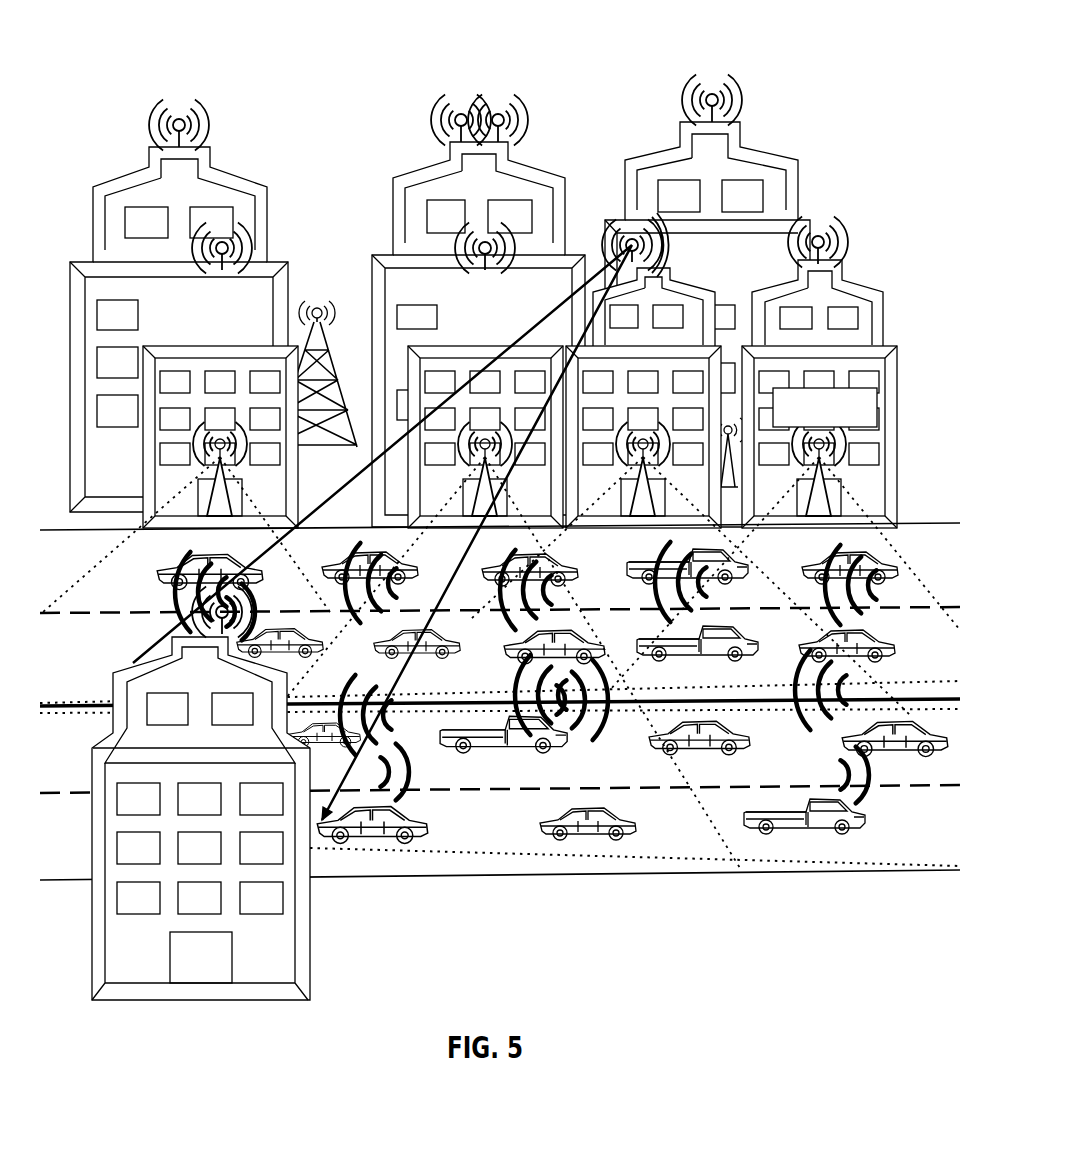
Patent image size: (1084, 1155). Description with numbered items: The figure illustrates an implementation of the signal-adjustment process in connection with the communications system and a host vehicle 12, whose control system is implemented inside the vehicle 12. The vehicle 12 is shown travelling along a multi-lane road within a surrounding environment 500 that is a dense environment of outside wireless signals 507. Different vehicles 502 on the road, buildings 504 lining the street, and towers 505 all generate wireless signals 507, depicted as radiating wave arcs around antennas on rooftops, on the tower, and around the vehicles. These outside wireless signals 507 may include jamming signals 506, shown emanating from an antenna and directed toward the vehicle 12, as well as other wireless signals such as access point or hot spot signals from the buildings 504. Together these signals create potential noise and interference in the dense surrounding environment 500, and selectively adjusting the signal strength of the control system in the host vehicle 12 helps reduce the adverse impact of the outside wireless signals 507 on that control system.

The surrounding environment 500 is at (500, 504).
The vehicles 502 is at (593, 836).
The buildings 504 is at (792, 158).
The towers 505 is at (318, 306).
The jamming signals 506 is at (607, 238).
The outside wireless signals 507 is at (150, 118).
The vehicle 12 is at (518, 747).